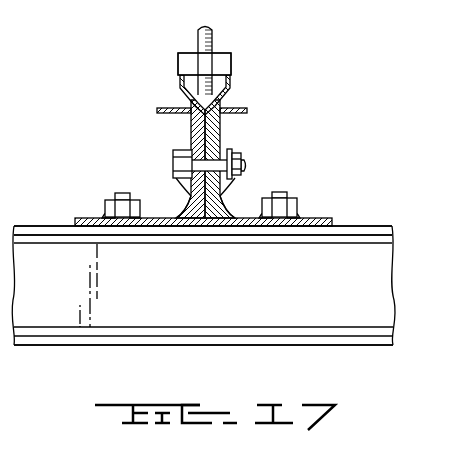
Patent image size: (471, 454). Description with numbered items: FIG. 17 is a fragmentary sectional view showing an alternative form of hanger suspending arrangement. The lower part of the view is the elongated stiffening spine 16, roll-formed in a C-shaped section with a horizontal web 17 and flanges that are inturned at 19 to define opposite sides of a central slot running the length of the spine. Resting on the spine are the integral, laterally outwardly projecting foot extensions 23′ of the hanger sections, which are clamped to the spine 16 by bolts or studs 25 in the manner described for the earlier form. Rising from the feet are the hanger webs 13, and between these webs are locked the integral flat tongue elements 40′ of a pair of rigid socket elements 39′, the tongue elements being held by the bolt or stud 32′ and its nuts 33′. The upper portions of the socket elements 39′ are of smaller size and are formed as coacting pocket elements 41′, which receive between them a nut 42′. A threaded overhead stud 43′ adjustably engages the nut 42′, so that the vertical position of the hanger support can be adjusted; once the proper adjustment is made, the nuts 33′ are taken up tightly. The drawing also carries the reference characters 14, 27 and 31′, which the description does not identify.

The hanger web 13 is at (191, 125).
The flange plate 14 is at (249, 111).
The stiffening spine 16 is at (398, 272).
The horizontal web 17 is at (394, 307).
The inturned flange portion 19 is at (357, 229).
The foot extension 23′ is at (160, 223).
The stud 25 is at (123, 194).
The bolt 27 is at (290, 202).
The left fillet flange 31′ is at (189, 181).
The bolt or stud 32′ is at (222, 180).
The nut 33′ is at (247, 165).
The rigid socket element 39′ is at (188, 86).
The flat tongue element 40′ is at (213, 136).
The pocket element 41′ is at (230, 66).
The nut 42′ is at (198, 66).
The threaded overhead stud 43′ is at (211, 46).